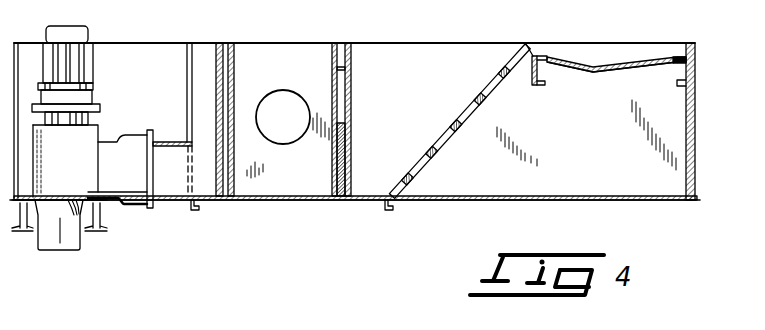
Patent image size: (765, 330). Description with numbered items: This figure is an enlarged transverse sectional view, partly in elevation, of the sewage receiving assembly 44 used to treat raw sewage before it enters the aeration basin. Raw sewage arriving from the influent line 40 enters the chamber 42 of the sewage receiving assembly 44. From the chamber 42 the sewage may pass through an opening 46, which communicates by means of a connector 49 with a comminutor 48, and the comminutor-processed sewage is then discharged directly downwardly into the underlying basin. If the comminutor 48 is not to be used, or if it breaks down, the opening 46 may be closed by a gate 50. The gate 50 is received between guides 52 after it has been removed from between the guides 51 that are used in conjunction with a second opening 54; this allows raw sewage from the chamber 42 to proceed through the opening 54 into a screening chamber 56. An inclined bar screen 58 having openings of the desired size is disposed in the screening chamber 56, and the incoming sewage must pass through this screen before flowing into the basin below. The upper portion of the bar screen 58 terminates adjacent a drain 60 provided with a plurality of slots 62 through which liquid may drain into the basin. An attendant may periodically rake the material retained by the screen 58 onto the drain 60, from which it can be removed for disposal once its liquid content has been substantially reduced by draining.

The influent line 40 is at (297, 128).
The chamber 42 is at (302, 59).
The sewage receiving assembly 44 is at (528, 43).
The opening 46 is at (232, 150).
The comminutor 48 is at (93, 103).
The connector 49 is at (158, 141).
The gate 50 is at (351, 120).
The guides 51 is at (344, 68).
The guides 52 is at (229, 43).
The opening 54 is at (352, 162).
The screening chamber 56 is at (443, 94).
The inclined bar screen 58 is at (449, 137).
The drain 60 is at (585, 69).
The slots 62 is at (650, 62).